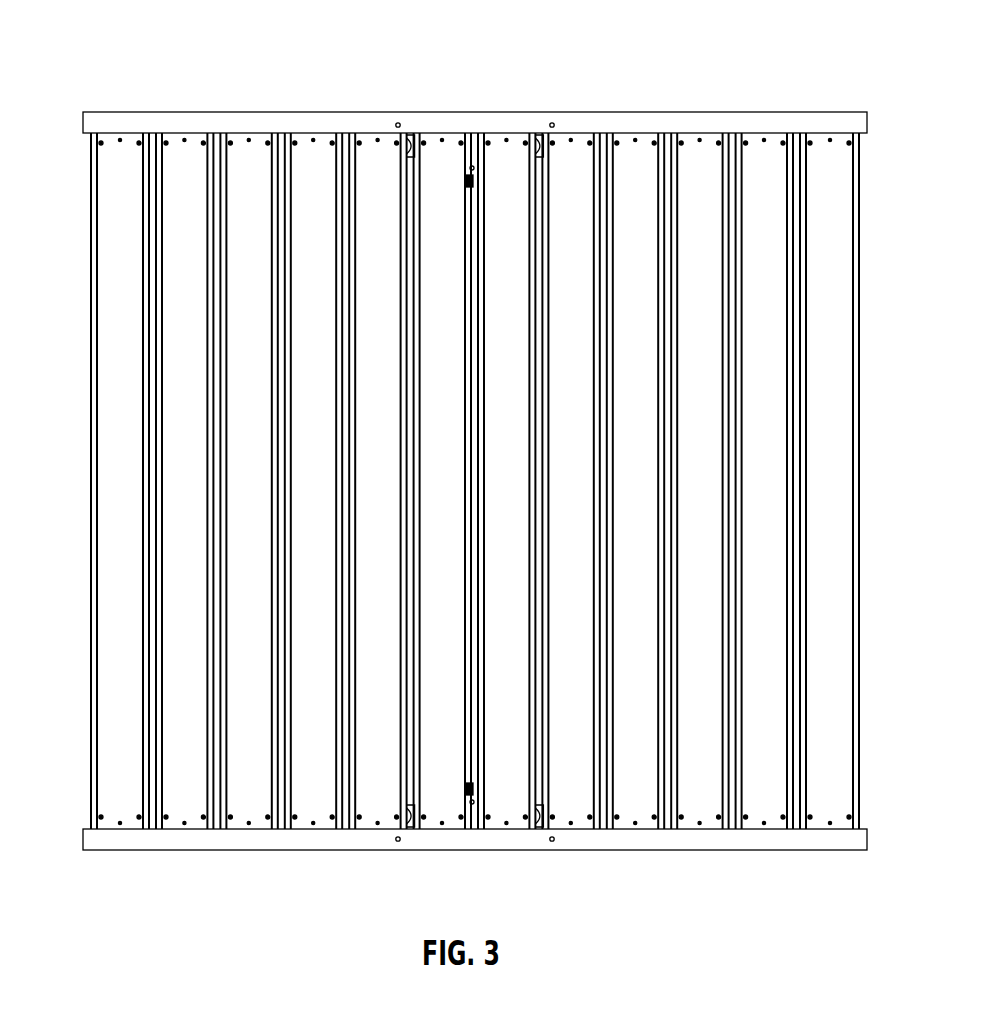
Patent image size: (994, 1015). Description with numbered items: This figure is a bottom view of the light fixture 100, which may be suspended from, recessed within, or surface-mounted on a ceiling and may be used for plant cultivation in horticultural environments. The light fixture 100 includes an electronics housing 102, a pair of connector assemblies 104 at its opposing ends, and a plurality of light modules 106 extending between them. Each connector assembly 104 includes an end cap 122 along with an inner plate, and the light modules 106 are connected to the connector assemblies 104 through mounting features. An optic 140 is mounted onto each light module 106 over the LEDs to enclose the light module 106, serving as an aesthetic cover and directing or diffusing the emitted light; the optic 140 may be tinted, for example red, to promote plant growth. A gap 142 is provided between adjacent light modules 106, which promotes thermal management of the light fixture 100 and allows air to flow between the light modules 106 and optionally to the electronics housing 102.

The light fixture 100 is at (116, 31).
The electronics housing 102 is at (473, 185).
The connector assembly 104 is at (667, 125).
The light module 106 is at (243, 175).
The end cap 122 is at (826, 125).
The optic 140 is at (190, 718).
The gap 142 is at (215, 667).